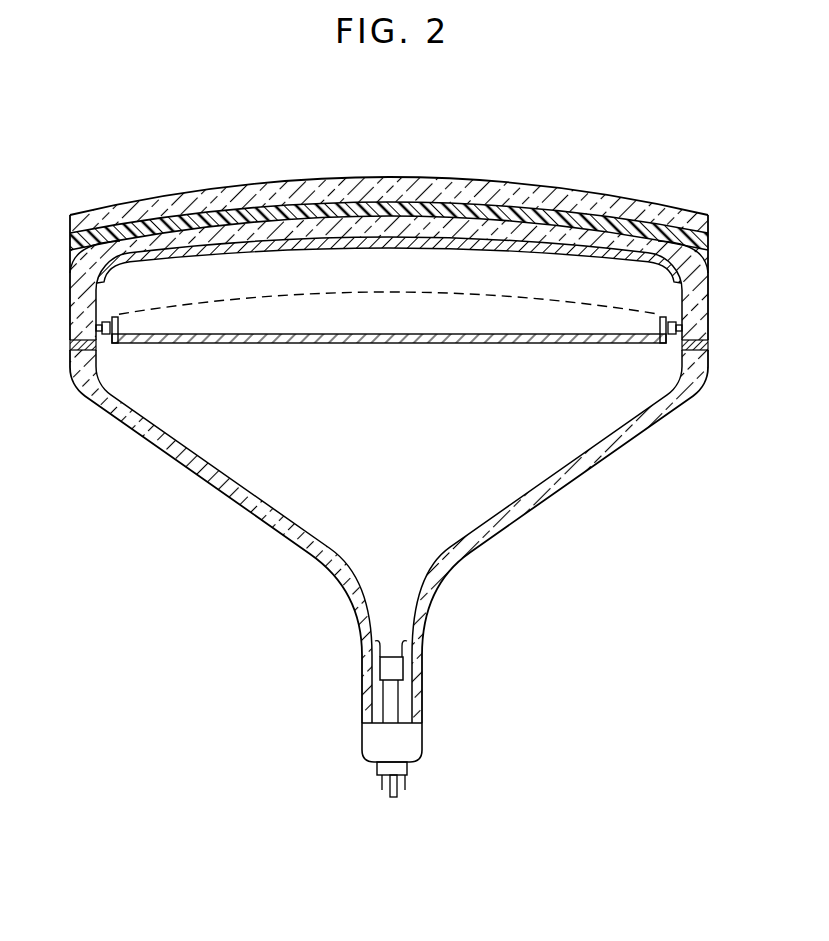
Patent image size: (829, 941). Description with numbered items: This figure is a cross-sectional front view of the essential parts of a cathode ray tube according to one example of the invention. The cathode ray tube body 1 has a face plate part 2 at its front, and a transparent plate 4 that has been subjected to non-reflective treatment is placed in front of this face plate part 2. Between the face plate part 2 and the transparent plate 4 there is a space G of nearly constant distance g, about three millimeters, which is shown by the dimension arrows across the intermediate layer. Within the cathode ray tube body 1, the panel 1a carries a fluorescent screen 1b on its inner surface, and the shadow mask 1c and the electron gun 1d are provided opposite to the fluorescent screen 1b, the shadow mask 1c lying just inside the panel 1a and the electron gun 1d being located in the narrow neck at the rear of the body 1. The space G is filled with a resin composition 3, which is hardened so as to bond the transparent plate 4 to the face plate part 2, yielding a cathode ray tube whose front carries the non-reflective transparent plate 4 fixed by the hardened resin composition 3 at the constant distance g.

The cathode ray tube body 1 is at (198, 478).
The panel 1a is at (698, 289).
The fluorescent screen 1b is at (621, 261).
The shadow mask 1c is at (541, 299).
The electron gun 1d is at (393, 700).
The face plate 2 is at (281, 218).
The resin composition 3 is at (203, 220).
The transparent plate 4 is at (441, 190).
The space G is at (527, 216).
The distance g is at (123, 247).